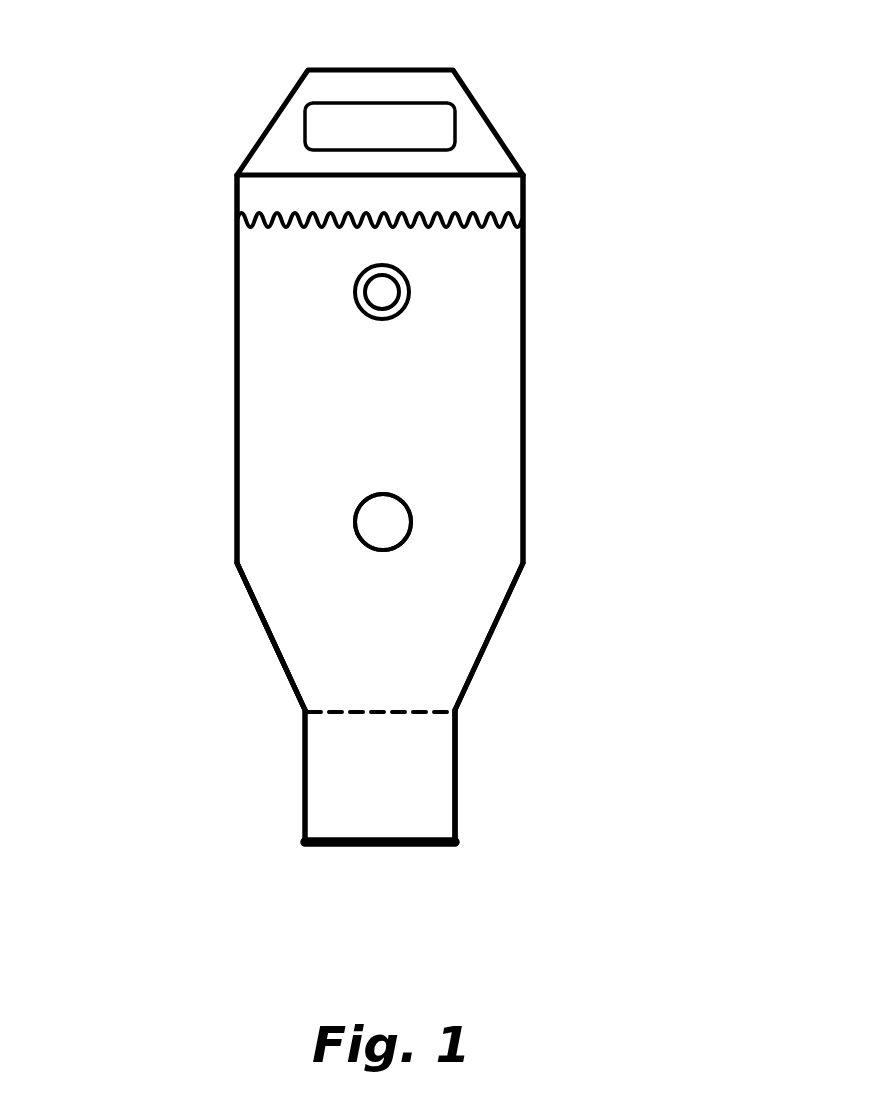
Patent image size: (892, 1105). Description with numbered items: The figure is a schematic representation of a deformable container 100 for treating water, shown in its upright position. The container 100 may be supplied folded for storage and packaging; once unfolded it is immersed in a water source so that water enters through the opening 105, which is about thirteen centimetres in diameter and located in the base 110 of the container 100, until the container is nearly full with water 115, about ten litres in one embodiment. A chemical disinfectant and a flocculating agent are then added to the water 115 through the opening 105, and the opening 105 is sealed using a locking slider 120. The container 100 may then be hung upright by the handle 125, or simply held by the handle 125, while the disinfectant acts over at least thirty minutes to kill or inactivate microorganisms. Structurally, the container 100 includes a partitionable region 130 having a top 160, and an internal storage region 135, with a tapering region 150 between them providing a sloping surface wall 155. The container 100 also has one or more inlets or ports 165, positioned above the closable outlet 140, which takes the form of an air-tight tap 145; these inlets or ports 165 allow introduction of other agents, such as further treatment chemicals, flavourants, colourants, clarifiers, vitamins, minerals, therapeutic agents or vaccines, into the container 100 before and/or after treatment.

The container 100 is at (223, 370).
The opening 105 is at (380, 853).
The base 110 is at (472, 832).
The water 115 is at (465, 237).
The locking slider 120 is at (333, 847).
The handle 125 is at (420, 125).
The partitionable region 130 is at (417, 750).
The internal storage region 135 is at (360, 422).
The closable outlet 140 is at (360, 538).
The air-tight tap 145 is at (414, 528).
The tapering region 150 is at (458, 623).
The sloping surface wall 155 is at (267, 633).
The top 160 is at (343, 722).
The inlets or ports 165 is at (398, 305).